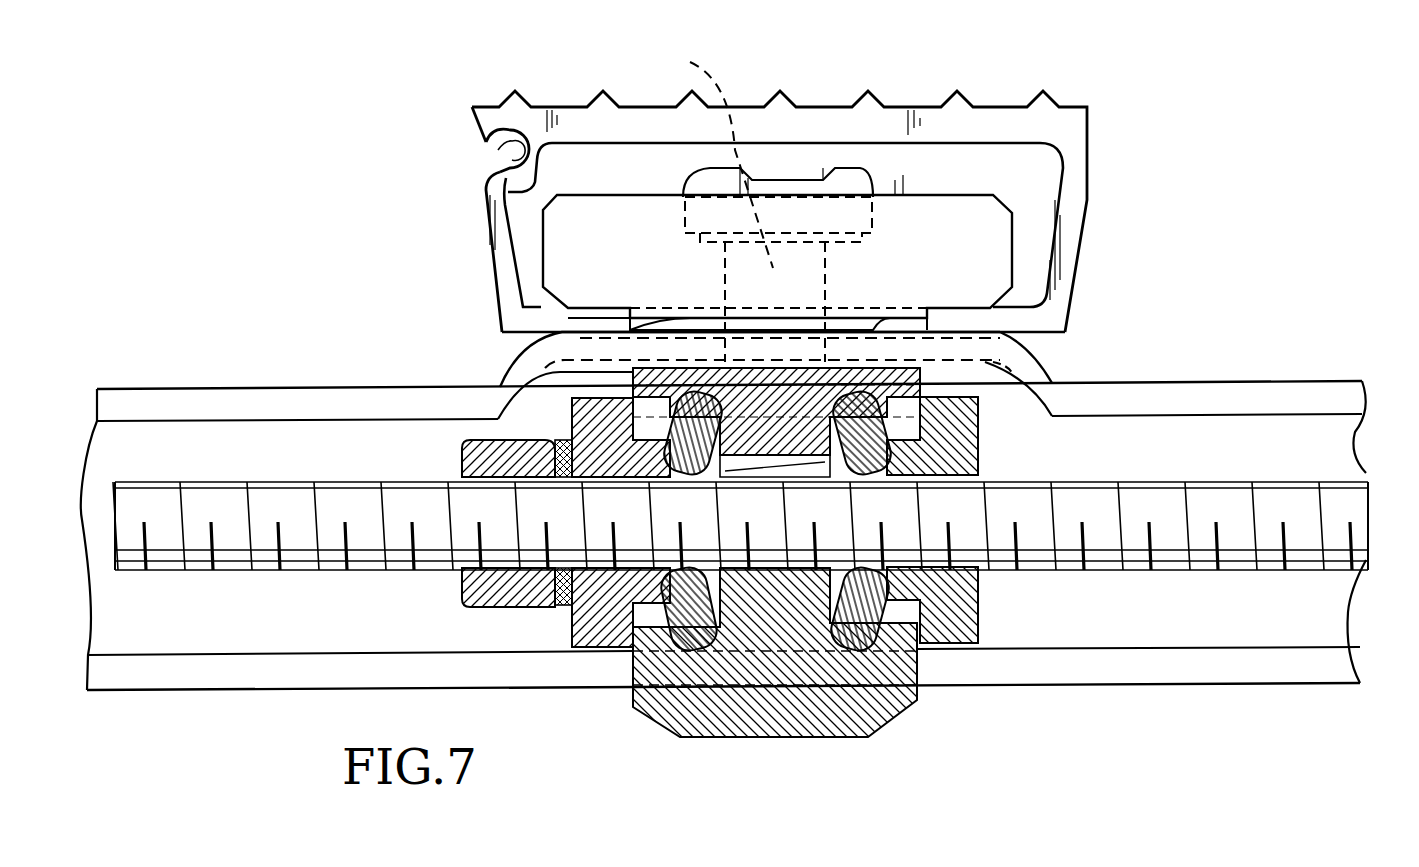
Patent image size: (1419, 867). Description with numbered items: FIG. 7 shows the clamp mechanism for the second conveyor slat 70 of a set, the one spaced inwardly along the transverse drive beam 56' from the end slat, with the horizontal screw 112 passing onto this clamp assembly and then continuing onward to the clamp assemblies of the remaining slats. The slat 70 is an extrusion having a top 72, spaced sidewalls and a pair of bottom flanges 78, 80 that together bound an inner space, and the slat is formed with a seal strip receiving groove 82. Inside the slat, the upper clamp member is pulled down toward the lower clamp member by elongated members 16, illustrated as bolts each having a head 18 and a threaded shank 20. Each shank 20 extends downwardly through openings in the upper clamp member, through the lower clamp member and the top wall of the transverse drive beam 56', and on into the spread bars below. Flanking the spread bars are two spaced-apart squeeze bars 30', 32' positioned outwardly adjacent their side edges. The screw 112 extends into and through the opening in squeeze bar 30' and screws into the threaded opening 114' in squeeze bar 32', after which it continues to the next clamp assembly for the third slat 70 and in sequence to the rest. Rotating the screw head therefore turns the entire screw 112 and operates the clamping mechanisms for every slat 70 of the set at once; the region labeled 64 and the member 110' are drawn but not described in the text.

The elongated member 16 is at (736, 204).
The head 18 is at (852, 173).
The threaded shank 20 is at (799, 740).
The squeeze bar 30' is at (611, 565).
The squeeze bar 32' is at (985, 520).
The transverse drive beam 56' is at (723, 488).
The tube wall 64 is at (723, 709).
The conveyor slat 70 is at (1112, 126).
The top 72 is at (785, 105).
The bottom flange 78 is at (1062, 334).
The bottom flange 80 is at (517, 333).
The seal strip receiving groove 82 is at (508, 152).
The retaining ring 110' is at (467, 533).
The screw 112 is at (725, 549).
The threaded opening 114' is at (740, 500).